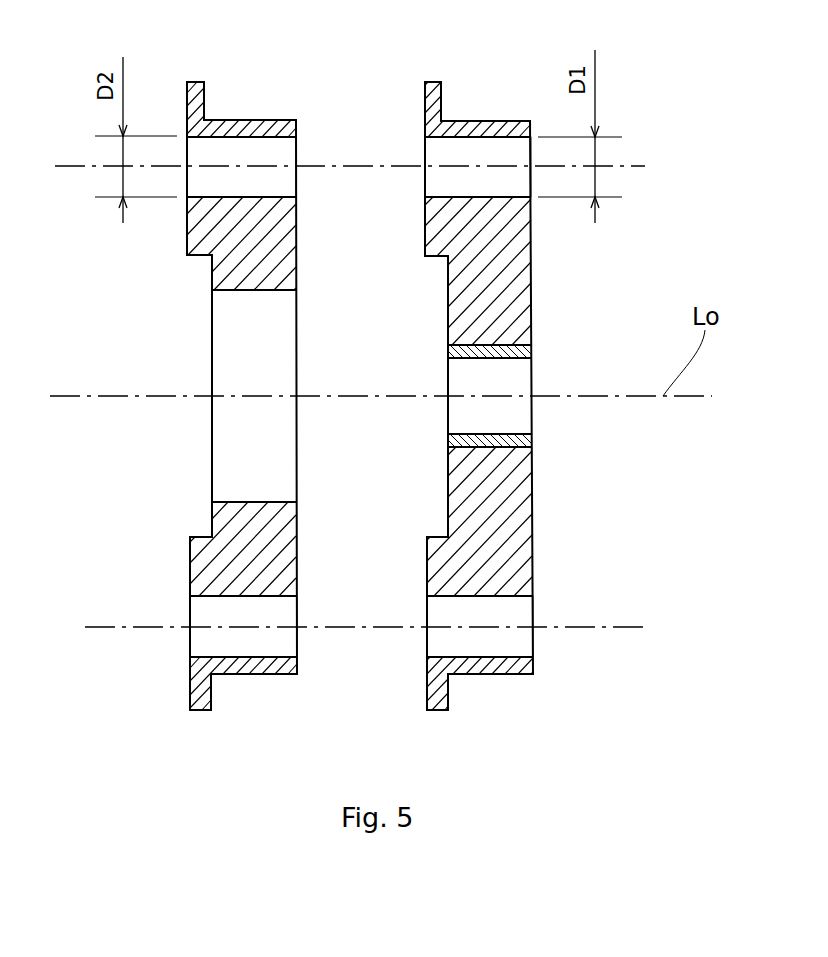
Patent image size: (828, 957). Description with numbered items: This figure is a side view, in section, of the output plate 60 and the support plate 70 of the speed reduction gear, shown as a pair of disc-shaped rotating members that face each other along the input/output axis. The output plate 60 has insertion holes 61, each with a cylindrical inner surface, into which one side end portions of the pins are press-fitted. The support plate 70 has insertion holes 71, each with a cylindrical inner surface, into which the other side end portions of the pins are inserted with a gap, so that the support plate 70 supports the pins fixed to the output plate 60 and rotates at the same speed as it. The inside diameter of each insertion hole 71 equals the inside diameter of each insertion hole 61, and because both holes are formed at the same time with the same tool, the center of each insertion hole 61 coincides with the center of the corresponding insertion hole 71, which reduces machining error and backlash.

The output plate 60 is at (479, 75).
The insertion hole 61 is at (447, 159).
The support plate 70 is at (243, 81).
The insertion hole 71 is at (265, 153).